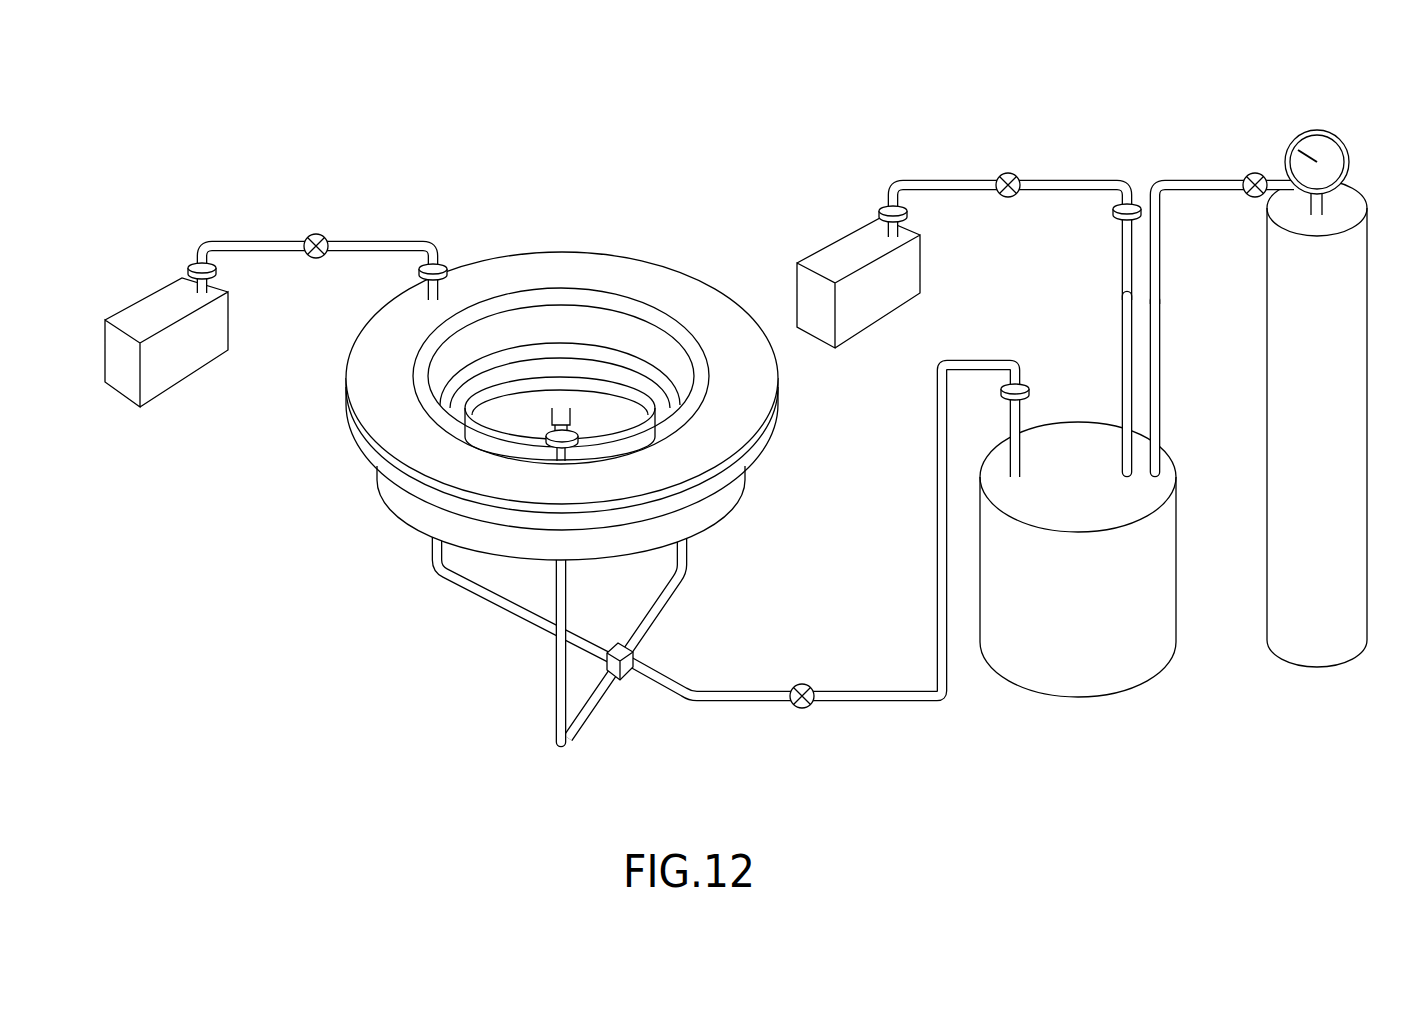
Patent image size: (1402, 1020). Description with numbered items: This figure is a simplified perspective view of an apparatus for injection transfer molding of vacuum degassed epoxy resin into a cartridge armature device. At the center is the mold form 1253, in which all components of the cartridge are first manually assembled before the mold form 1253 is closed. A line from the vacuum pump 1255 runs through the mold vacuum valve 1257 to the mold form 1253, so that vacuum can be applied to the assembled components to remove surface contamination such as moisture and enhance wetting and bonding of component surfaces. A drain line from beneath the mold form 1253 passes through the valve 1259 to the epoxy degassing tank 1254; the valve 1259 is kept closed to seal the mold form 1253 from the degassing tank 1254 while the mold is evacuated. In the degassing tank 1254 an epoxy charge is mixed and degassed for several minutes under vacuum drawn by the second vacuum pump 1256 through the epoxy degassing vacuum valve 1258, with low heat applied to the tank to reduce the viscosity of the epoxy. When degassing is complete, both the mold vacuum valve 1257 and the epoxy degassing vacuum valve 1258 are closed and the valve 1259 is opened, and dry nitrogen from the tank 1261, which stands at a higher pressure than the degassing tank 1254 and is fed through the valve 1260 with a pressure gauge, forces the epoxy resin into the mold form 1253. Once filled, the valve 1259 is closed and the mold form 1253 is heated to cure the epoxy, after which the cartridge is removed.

The mold form 1253 is at (585, 240).
The epoxy degassing tank 1254 is at (1052, 718).
The vacuum pump 1255 is at (178, 413).
The vacuum pump 1256 is at (836, 221).
The mold vacuum valve 1257 is at (318, 228).
The epoxy degassing vacuum valve 1258 is at (1003, 167).
The valve 1259 is at (800, 723).
The valve 1260 is at (1243, 165).
The tank 1261 is at (1298, 684).